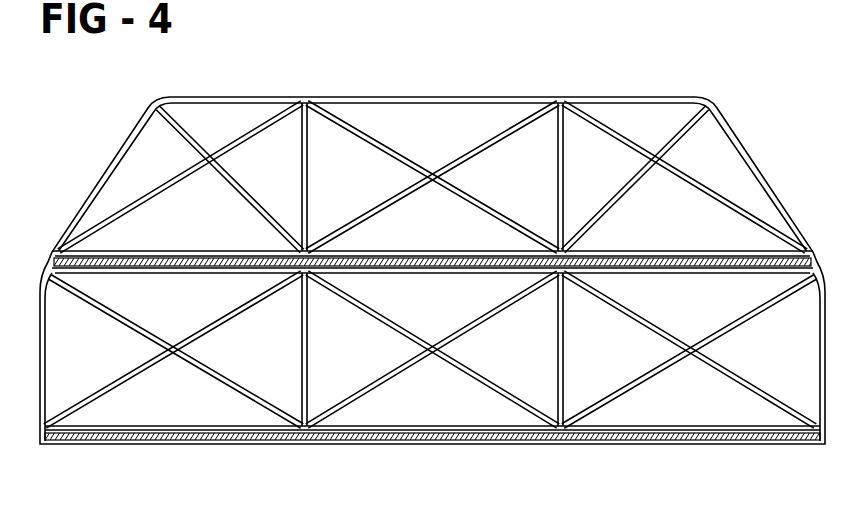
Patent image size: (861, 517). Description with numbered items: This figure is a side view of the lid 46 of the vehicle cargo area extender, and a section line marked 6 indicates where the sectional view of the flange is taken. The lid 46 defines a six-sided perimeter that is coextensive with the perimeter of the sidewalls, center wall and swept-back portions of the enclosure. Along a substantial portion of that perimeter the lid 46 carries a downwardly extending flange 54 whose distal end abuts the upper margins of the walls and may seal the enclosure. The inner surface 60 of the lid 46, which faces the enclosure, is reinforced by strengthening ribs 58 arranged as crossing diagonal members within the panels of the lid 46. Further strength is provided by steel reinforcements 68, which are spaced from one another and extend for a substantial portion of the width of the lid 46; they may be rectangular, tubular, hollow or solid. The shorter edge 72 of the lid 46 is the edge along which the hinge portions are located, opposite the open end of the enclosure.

The lid 46 is at (427, 271).
The flange 54 is at (403, 105).
The ribs 58 is at (700, 128).
The inner surface 60 is at (188, 218).
The steel reinforcements 68 is at (410, 252).
The shorter edge 72 is at (450, 97).
The section line 6- 6 is at (847, 358).